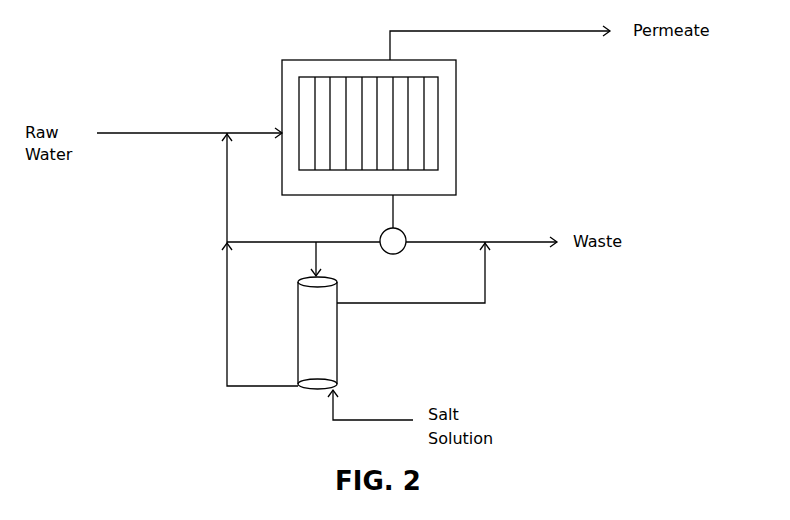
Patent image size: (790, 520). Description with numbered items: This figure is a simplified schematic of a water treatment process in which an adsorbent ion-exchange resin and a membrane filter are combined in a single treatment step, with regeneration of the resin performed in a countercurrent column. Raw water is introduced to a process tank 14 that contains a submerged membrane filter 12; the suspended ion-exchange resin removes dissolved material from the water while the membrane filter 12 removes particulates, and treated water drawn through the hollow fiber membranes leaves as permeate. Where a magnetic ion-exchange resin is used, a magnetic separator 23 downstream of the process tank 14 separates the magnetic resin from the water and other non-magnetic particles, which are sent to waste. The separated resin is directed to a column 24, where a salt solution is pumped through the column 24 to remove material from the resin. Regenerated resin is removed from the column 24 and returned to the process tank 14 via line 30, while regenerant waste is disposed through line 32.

The submerged membrane filter 12 is at (440, 113).
The process tank 14 is at (458, 162).
The magnetic separator 23 is at (398, 237).
The column 24 is at (327, 333).
The line 30 is at (225, 357).
The line 32 is at (485, 276).